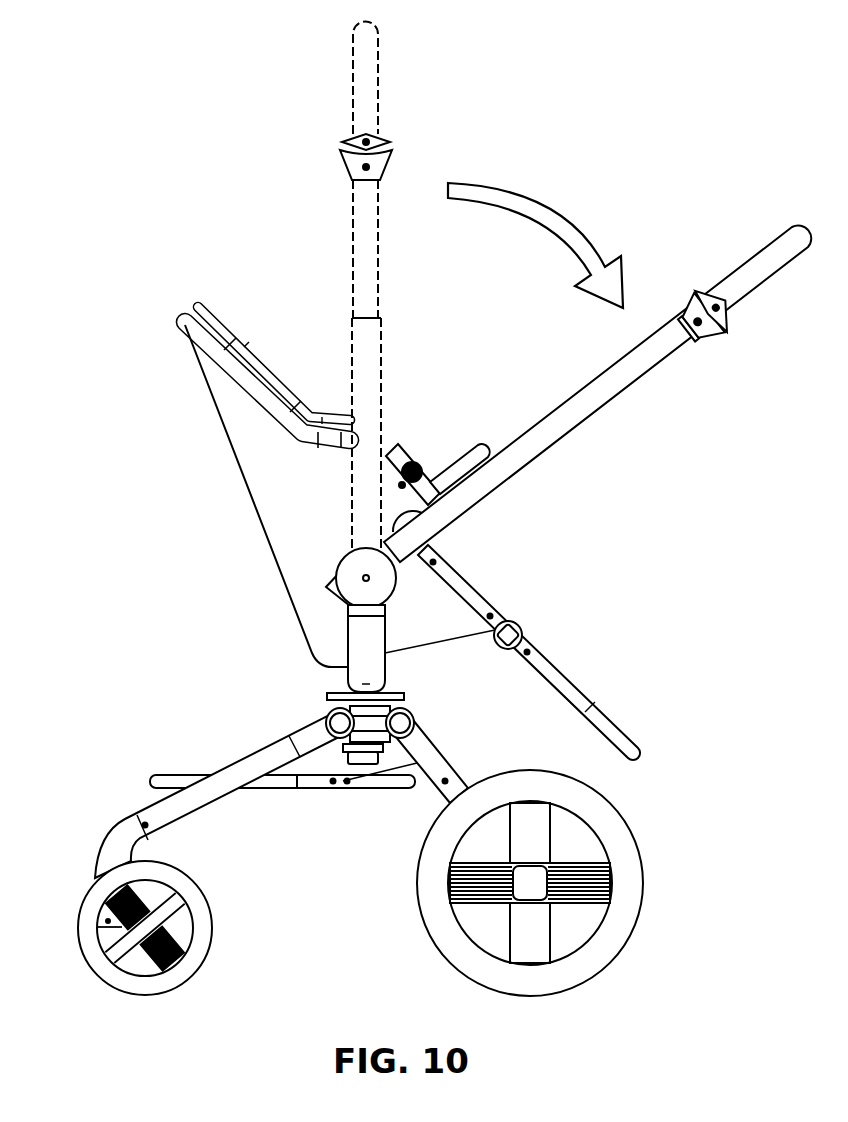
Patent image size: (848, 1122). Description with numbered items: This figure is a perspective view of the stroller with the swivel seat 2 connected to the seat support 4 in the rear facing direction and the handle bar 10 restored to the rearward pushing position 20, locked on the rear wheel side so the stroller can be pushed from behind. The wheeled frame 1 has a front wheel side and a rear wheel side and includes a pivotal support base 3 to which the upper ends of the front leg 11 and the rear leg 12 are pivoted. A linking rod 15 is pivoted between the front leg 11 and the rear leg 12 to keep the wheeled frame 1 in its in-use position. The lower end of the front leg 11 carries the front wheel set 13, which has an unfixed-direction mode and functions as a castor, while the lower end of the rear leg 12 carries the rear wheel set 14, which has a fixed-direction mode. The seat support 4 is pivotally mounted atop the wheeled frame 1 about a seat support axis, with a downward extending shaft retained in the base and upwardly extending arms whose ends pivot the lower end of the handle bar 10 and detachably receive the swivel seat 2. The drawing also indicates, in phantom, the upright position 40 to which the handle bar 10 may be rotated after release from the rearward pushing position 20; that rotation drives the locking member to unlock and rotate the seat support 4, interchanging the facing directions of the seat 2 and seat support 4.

The wheeled frame 1 is at (134, 609).
The swivel seat 2 is at (416, 386).
The pivotal support base 3 is at (331, 698).
The seat support 4 is at (385, 653).
The handle bar 10 is at (633, 386).
The front leg 11 is at (212, 786).
The rear leg 12 is at (441, 768).
The front wheel set 13 is at (92, 933).
The rear wheel set 14 is at (641, 880).
The linking rod 15 is at (326, 792).
The rearward pushing position 20 is at (614, 461).
The upright position 40 is at (318, 258).